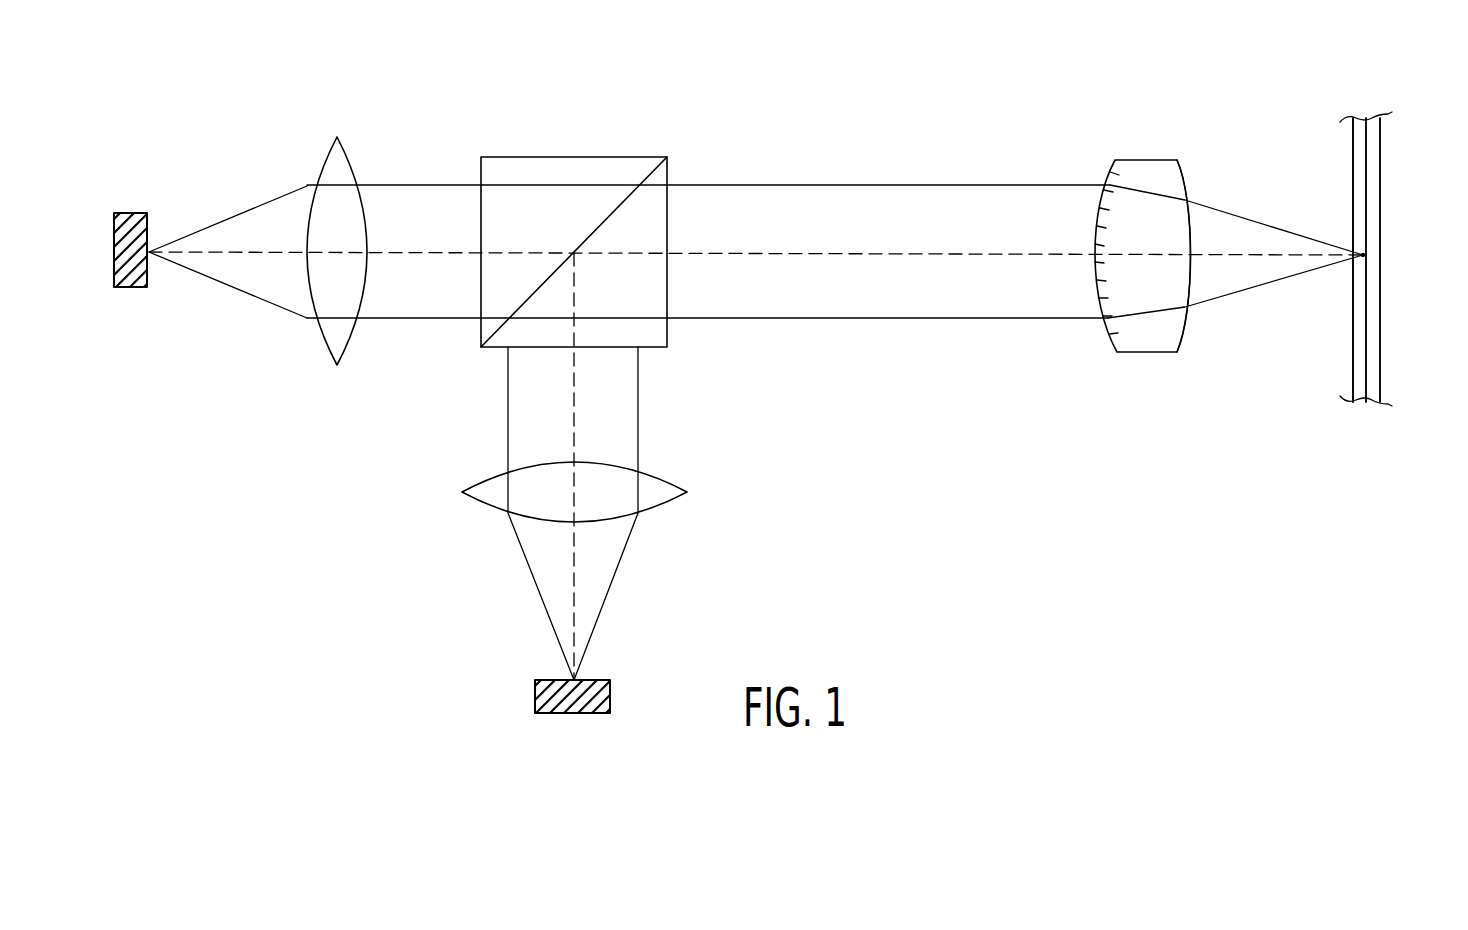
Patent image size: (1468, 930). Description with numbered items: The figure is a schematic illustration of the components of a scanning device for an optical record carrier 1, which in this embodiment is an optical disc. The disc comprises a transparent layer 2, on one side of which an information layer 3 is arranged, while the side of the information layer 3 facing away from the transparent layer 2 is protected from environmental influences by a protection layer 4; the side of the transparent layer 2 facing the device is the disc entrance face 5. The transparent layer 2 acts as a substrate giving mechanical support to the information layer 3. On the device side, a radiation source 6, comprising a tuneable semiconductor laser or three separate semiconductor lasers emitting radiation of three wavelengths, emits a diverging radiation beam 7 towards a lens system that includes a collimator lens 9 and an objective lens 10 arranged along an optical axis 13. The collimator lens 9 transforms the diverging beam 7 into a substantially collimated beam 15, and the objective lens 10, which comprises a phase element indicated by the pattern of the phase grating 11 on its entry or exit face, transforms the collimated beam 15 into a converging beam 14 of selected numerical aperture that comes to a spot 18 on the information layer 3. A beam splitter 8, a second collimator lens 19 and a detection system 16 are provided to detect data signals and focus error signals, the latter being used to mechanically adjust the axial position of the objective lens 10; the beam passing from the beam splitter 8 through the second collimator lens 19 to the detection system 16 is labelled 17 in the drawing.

The optical record carrier 1 is at (1385, 97).
The transparent layer 2 is at (1360, 193).
The information layer 3 is at (1368, 147).
The protection layer 4 is at (1372, 230).
The disc entrance face 5 is at (1352, 165).
The radiation source 6 is at (130, 290).
The diverging radiation beam 7 is at (221, 218).
The beam splitter 8 is at (523, 150).
The collimator lens 9 is at (346, 147).
The objective lens 10 is at (1133, 158).
The phase grating 11 is at (1107, 326).
The optical axis 13 is at (1216, 252).
The converging beam 14 is at (1291, 228).
The collimated beam 15 is at (850, 182).
The detection system 16 is at (530, 690).
The reflected converging beam 17 is at (528, 575).
The spot 18 is at (1368, 263).
The second collimator lens 19 is at (470, 500).